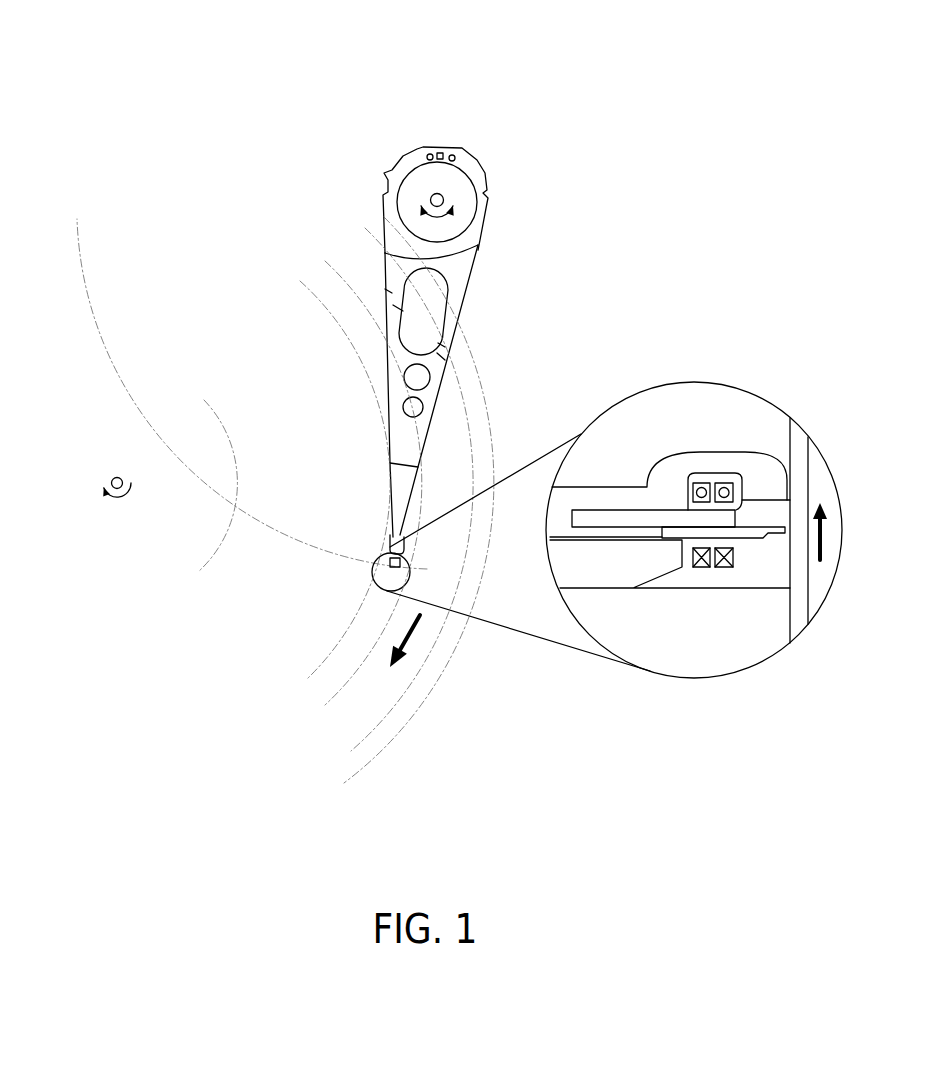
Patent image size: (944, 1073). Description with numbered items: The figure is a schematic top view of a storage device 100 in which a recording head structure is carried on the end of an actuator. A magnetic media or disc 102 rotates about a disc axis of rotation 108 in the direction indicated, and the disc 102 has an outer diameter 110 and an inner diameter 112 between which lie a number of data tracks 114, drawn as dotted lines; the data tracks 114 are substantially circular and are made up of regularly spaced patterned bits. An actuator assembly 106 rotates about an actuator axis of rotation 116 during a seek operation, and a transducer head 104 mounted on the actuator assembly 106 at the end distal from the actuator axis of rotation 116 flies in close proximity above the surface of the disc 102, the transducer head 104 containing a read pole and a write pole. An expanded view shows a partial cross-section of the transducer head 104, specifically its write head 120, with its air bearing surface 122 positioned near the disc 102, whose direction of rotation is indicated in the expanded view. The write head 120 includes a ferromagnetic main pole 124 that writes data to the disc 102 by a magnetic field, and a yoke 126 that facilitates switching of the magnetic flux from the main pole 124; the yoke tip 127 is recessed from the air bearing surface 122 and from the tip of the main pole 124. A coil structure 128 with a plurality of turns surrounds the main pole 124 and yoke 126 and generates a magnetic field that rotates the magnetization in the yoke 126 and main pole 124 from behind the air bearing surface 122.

The storage device 100 is at (178, 75).
The disc 102 is at (282, 217).
The transducer head 104 is at (373, 563).
The actuator assembly 106 is at (382, 194).
The disc axis of rotation 108 is at (116, 477).
The outer diameter 110 is at (363, 735).
The inner diameter 112 is at (208, 560).
The data tracks 114 is at (313, 702).
The actuator axis of rotation 116 is at (442, 202).
The write head 120 is at (664, 432).
The air bearing surface 122 is at (790, 560).
The main pole 124 is at (737, 540).
The yoke 126 is at (633, 508).
The yoke tip 127 is at (757, 497).
The coil structure 128 is at (697, 582).